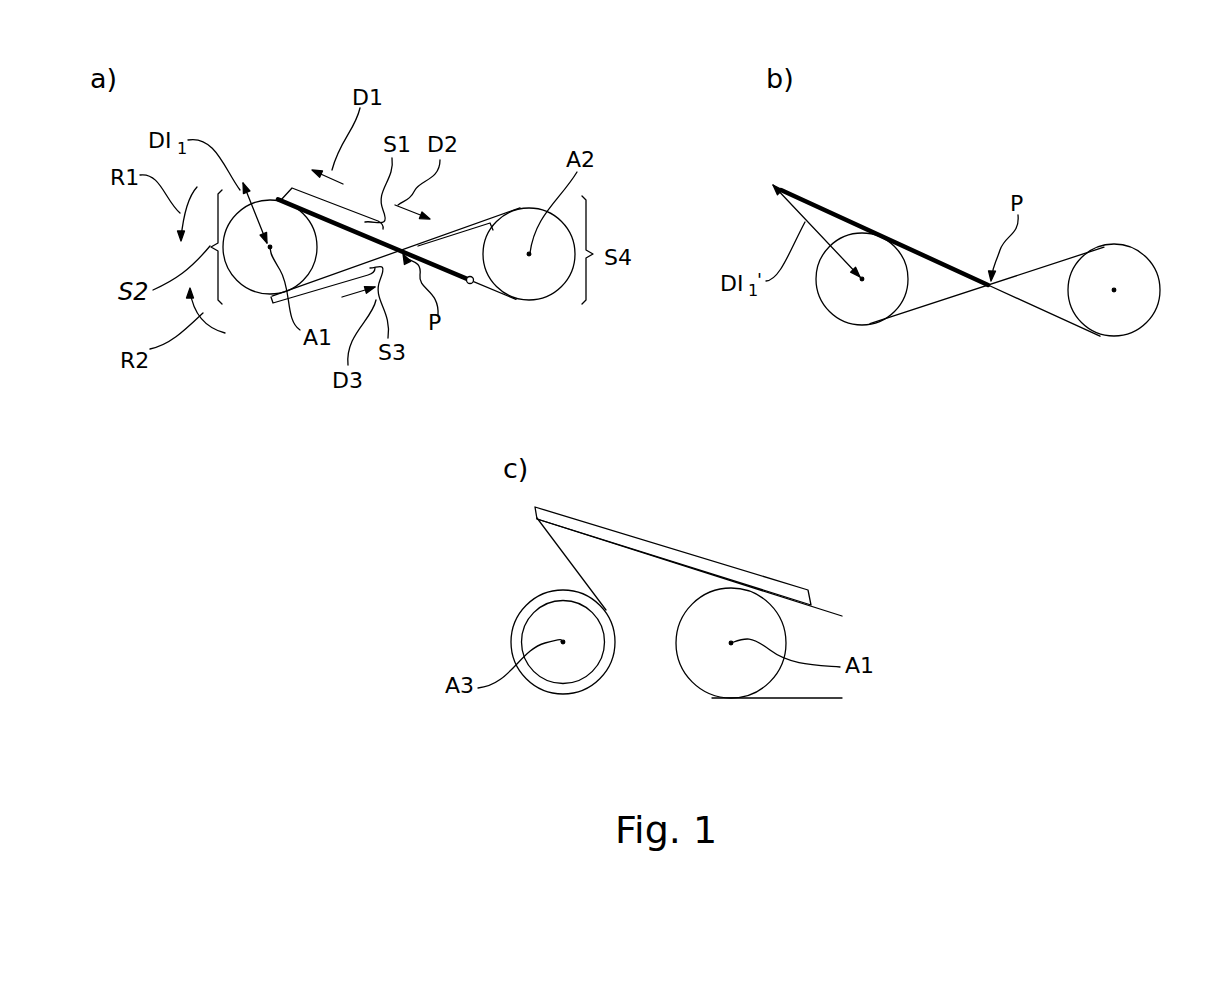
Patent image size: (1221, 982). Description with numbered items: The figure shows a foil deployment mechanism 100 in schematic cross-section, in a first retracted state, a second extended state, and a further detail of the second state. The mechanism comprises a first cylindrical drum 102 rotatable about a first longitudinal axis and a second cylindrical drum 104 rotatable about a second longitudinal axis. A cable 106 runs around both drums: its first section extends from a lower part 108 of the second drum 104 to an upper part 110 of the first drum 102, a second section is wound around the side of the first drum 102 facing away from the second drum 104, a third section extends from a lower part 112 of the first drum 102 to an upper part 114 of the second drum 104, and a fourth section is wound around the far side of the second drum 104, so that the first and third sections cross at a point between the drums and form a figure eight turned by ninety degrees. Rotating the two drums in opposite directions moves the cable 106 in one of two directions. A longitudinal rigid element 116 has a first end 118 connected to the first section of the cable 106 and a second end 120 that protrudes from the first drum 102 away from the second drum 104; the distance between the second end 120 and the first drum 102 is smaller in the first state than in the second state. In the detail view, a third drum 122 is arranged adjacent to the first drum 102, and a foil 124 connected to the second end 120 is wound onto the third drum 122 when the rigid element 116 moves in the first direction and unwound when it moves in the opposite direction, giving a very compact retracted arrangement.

The foil deployment mechanism 100 is at (426, 109).
The first cylindrical drum 102 is at (262, 276).
The second cylindrical drum 104 is at (541, 288).
The cable 106 is at (468, 222).
The lower part of the second drum 108 is at (531, 305).
The upper part of the first drum 110 is at (281, 183).
The lower part of the first drum 112 is at (268, 303).
The upper part of the second drum 114 is at (527, 200).
The longitudinal rigid element 116 is at (278, 200).
The first end 118 is at (470, 287).
The second end 120 is at (247, 182).
The third drum 122 is at (573, 660).
The foil 124 is at (558, 555).